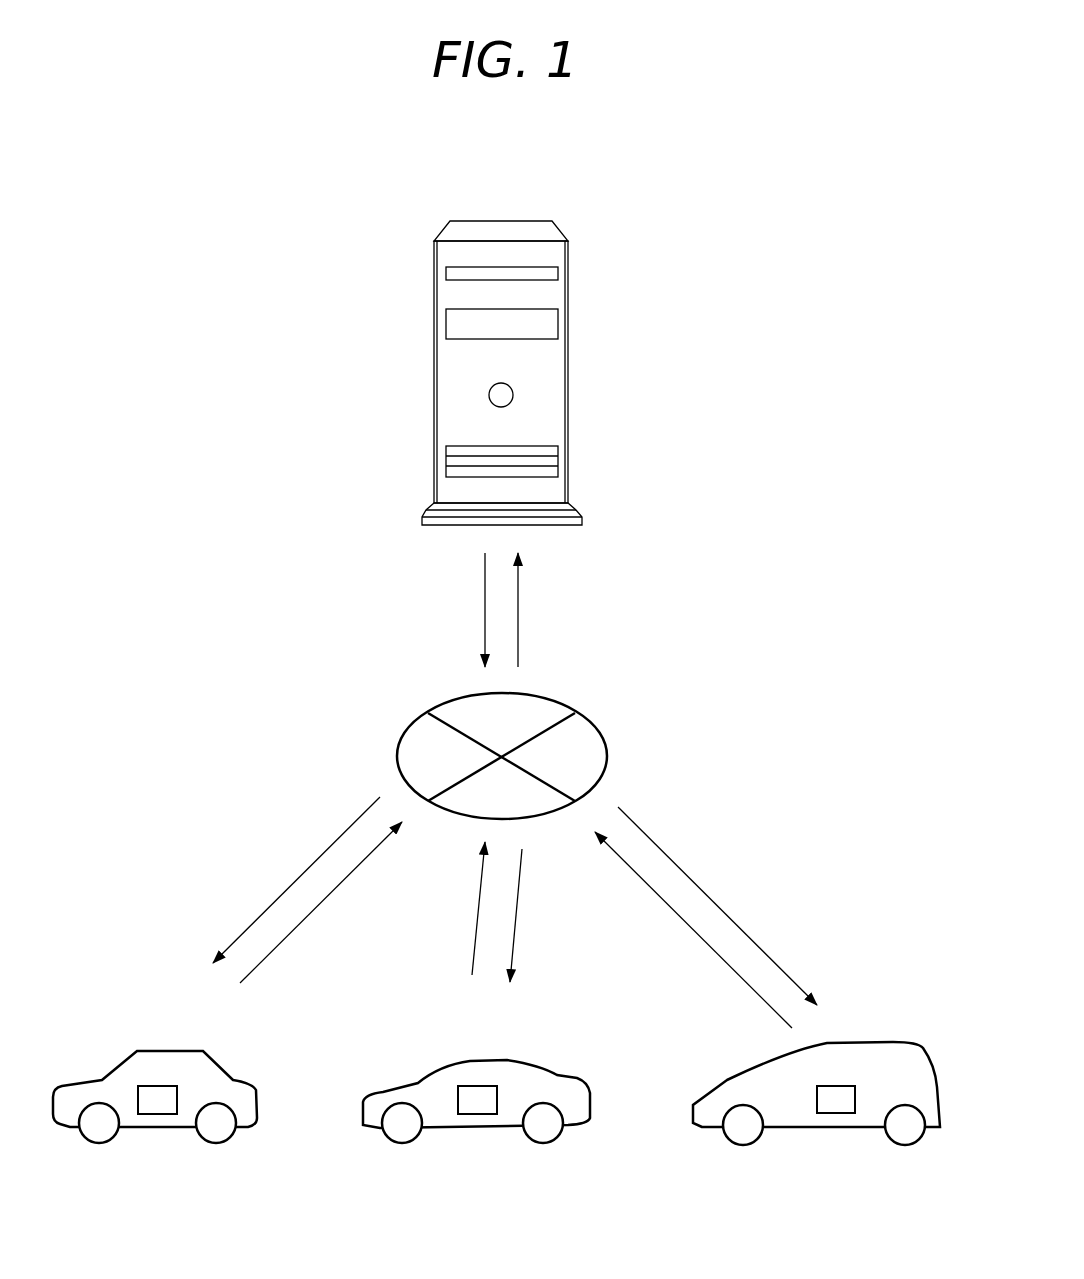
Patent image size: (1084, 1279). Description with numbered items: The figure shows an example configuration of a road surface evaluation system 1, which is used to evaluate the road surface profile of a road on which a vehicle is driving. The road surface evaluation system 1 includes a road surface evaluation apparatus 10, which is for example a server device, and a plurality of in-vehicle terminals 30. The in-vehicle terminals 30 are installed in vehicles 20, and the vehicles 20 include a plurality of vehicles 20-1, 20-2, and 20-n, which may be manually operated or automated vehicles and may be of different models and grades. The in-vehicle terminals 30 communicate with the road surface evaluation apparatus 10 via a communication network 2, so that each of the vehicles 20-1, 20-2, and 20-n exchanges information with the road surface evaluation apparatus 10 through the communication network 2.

The road surface evaluation system 1 is at (753, 278).
The road surface evaluation apparatus 10 is at (528, 221).
The communication network 2 is at (590, 720).
The vehicles 20 is at (499, 1054).
The vehicle 20-1 is at (155, 1051).
The vehicle 20-2 is at (510, 1028).
The vehicle 20-n is at (890, 1042).
The in-vehicle terminals 30 is at (162, 1115).